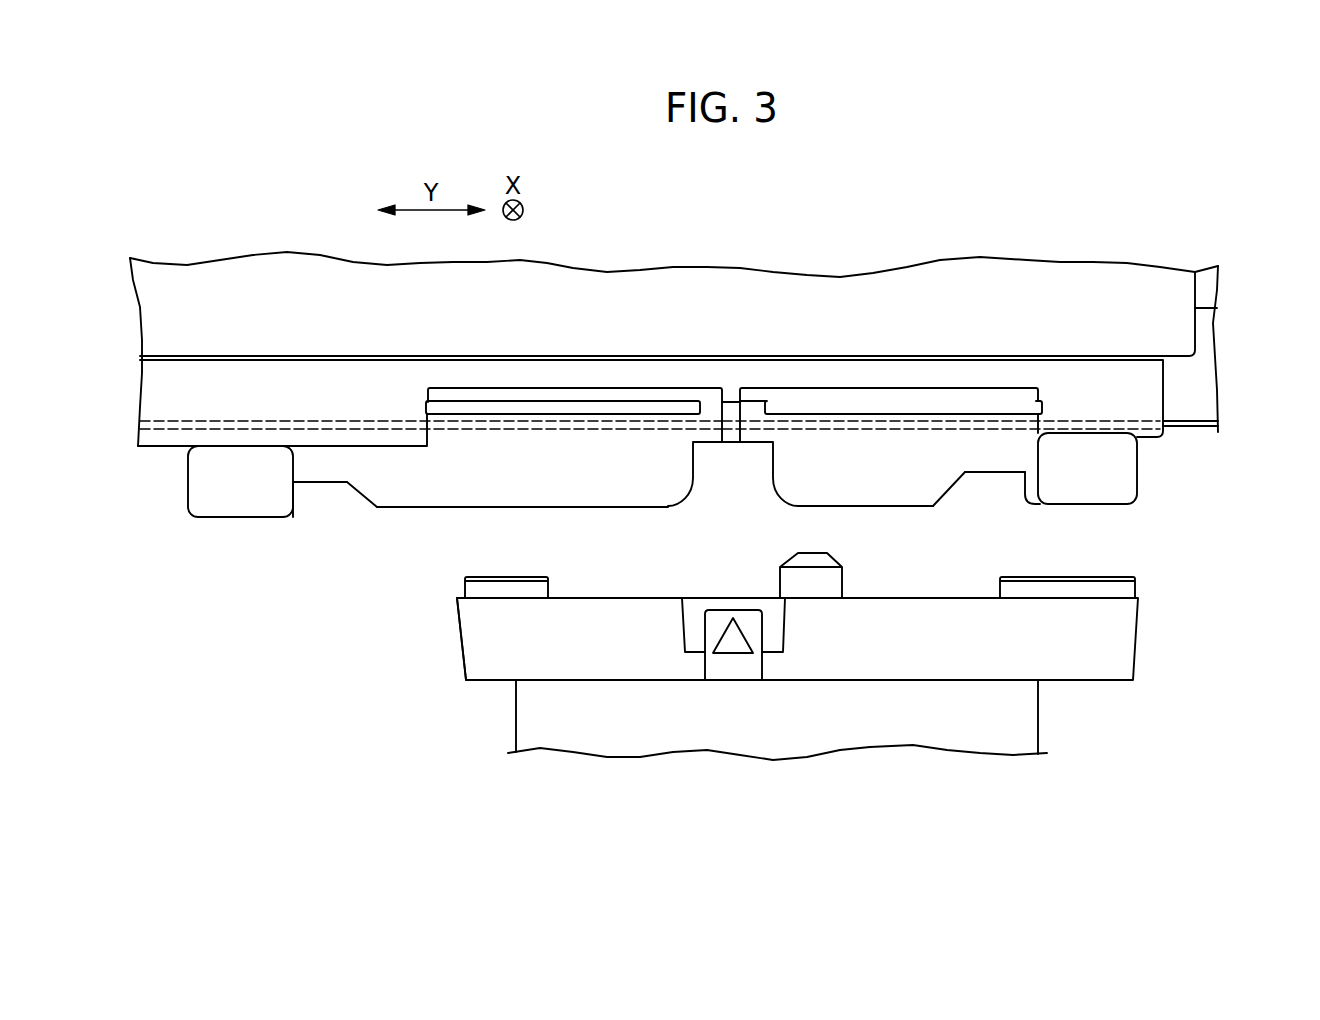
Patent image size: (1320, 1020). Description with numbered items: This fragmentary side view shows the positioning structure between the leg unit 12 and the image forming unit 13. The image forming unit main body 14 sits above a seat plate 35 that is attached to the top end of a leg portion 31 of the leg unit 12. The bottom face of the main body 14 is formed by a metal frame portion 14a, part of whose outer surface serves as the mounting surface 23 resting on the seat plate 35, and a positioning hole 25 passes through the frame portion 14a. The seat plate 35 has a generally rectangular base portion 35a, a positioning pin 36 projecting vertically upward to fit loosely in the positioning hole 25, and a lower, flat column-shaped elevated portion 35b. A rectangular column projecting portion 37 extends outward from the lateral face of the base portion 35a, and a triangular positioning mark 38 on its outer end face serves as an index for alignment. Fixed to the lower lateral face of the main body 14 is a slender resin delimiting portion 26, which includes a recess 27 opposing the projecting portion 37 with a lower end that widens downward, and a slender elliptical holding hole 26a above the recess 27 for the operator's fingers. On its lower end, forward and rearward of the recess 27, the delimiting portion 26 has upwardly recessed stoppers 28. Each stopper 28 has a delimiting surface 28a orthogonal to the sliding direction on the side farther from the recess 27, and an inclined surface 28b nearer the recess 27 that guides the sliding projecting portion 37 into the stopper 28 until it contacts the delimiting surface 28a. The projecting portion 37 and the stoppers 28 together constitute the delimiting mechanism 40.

The leg unit 12 is at (1082, 717).
The image forming unit 13 is at (709, 412).
The image forming unit main body 14 is at (705, 349).
The frame portion 14a is at (1191, 462).
The mounting surface 23 is at (431, 462).
The positioning hole 25 is at (941, 458).
The delimiting portion 26 is at (655, 532).
The holding hole 26a is at (734, 373).
The recess 27 is at (733, 490).
The stopper 28 is at (659, 515).
The delimiting surface 28a is at (648, 534).
The inclined surface 28b is at (653, 534).
The leg portion 31 is at (735, 720).
The seat plate 35 is at (836, 639).
The base portion 35a is at (420, 639).
The elevated portion 35b is at (820, 560).
The positioning pin 36 is at (796, 555).
The projecting portion 37 is at (692, 645).
The positioning mark 38 is at (733, 683).
The delimiting mechanism 40 is at (1018, 382).